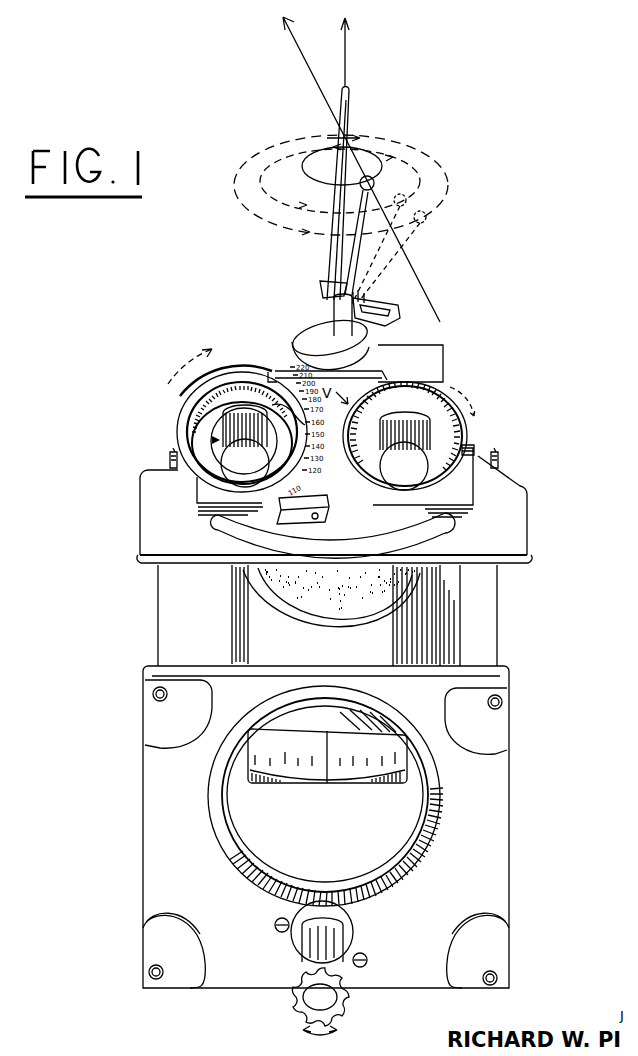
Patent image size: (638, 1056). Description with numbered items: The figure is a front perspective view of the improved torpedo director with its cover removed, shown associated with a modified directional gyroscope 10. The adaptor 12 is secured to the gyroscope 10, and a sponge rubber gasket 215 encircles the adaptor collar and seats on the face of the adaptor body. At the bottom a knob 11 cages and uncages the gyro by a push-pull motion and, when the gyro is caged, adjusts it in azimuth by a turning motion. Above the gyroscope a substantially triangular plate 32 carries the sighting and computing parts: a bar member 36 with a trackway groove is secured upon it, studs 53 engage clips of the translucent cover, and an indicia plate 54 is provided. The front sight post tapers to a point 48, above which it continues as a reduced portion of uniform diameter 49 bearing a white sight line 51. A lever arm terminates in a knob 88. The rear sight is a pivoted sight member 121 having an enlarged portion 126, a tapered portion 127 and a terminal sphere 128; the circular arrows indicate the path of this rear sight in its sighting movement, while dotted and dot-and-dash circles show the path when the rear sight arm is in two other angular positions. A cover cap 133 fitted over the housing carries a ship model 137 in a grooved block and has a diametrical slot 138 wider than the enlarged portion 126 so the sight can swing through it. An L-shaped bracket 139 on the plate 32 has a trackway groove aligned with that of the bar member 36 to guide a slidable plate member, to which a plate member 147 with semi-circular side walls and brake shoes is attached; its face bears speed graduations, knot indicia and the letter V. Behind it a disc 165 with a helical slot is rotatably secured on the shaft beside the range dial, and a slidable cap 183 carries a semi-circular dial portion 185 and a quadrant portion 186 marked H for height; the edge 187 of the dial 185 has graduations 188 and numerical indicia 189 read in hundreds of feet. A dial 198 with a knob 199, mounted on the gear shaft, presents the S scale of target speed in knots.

The gyroscope 10 is at (150, 818).
The knob 11 is at (292, 1012).
The adaptor 12 is at (283, 605).
The plate 32 is at (522, 522).
The bar member 36 is at (515, 490).
The point of front sight post 48 is at (343, 180).
The reduced uniform-diameter portion of front sight post 49 is at (351, 101).
The white sight line 51 is at (341, 115).
The studs 53 is at (499, 463).
The indicia plate 54 is at (332, 545).
The knob 88 is at (258, 540).
The pivoted sight member 121 is at (358, 270).
The enlarged portion of sight member 126 is at (322, 290).
The tapered portion of sight member 127 is at (366, 250).
The sphere 128 is at (375, 183).
The cover cap 133 is at (298, 333).
The ship model 137 is at (392, 317).
The diametrical slot 138 is at (333, 320).
The L-shaped bracket 139 is at (441, 360).
The plate member 147 is at (293, 380).
The disc 165 is at (180, 390).
The slidable cap 183 is at (233, 466).
The semi-circular dial portion 185 is at (200, 410).
The quadrant portion 186 is at (280, 508).
The edge of dial 187 is at (212, 420).
The graduations 188 is at (220, 435).
The numerical indicia 189 is at (213, 441).
The dial 198 is at (463, 420).
The knob 199 is at (474, 449).
The sponge rubber gasket 215 is at (305, 583).